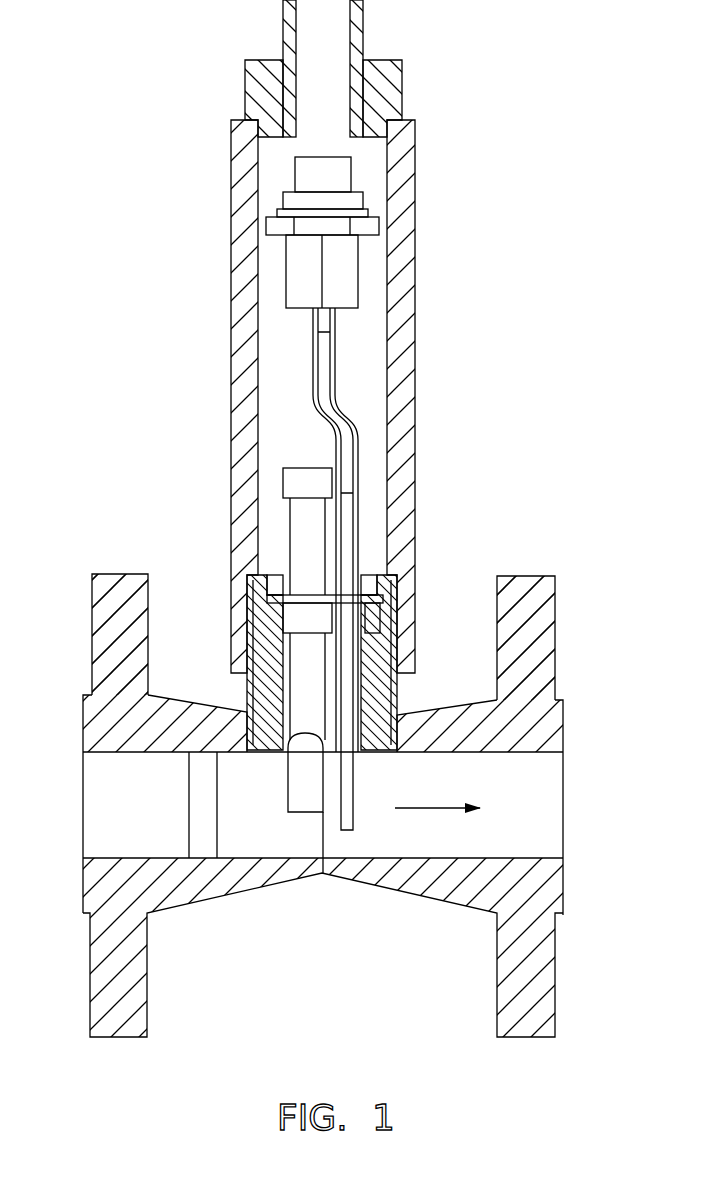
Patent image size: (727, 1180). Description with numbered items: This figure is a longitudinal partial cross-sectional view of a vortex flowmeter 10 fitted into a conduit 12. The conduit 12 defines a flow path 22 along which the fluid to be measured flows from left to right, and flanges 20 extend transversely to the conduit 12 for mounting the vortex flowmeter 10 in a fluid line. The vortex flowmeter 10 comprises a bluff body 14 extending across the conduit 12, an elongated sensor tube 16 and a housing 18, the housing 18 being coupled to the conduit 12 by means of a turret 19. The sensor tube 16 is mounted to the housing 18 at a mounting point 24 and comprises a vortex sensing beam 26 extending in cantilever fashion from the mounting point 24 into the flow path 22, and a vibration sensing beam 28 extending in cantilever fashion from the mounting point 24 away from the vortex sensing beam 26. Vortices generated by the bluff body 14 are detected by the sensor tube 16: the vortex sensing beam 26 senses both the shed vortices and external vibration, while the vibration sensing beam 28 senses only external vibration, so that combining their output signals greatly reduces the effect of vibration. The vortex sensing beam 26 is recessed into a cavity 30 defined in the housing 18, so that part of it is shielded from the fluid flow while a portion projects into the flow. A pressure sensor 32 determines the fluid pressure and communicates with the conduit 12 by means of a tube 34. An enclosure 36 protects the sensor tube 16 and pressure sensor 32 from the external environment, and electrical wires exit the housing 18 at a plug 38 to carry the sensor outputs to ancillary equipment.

The vortex flowmeter 10 is at (522, 493).
The conduit 12 is at (440, 755).
The bluff body 14 is at (189, 785).
The sensor tube 16 is at (305, 615).
The housing 18 is at (387, 708).
The turret 19 is at (360, 692).
The flanges 20 is at (90, 620).
The flow path 22 is at (503, 845).
The mounting point 24 is at (283, 623).
The vortex sensing beam 26 is at (288, 772).
The vibration sensing beam 28 is at (288, 518).
The cavity 30 is at (280, 700).
The pressure sensor 32 is at (360, 275).
The tube 34 is at (353, 433).
The enclosure 36 is at (232, 362).
The plug 38 is at (363, 23).